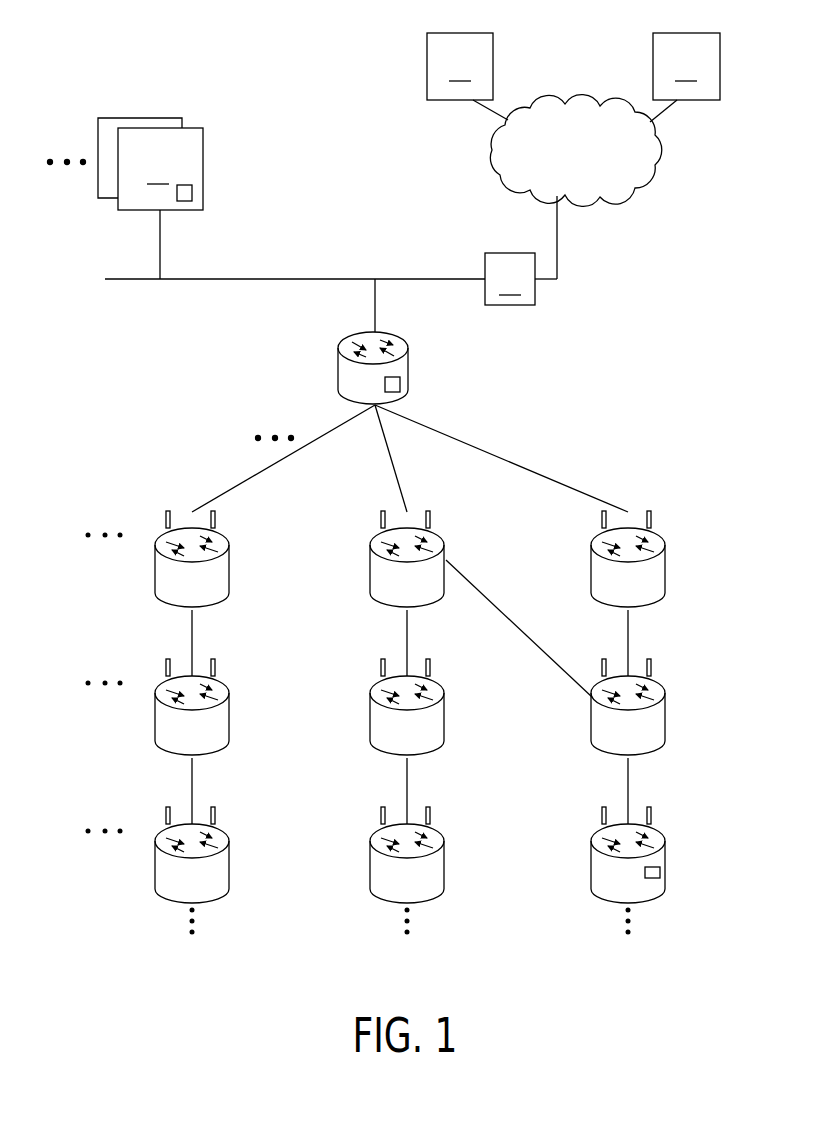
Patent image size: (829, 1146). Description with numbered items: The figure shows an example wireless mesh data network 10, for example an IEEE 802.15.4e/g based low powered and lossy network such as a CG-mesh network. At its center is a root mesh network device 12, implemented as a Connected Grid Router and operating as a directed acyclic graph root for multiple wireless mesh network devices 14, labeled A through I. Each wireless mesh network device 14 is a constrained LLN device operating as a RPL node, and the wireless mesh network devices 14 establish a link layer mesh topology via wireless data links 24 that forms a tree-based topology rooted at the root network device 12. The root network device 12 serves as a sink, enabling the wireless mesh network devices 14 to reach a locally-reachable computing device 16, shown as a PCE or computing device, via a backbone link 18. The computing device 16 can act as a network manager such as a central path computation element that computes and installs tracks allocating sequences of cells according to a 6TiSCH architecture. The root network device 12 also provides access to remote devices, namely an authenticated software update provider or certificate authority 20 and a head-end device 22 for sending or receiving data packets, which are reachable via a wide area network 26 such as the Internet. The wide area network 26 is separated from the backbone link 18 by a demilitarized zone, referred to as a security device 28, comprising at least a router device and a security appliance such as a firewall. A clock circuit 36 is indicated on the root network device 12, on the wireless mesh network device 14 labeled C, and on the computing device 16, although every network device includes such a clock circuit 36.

The wireless mesh data network 10 is at (521, 393).
The root mesh network device 12 is at (338, 372).
The wireless mesh network device 14 is at (155, 580).
The locally-reachable computing device 16 is at (178, 97).
The backbone link 18 is at (262, 278).
The remote device 20 is at (427, 48).
The remote device 22 is at (653, 50).
The wireless data link 24 is at (240, 483).
The wide area network 26 is at (637, 158).
The security device 28 is at (485, 262).
The clock circuit 36 is at (192, 200).